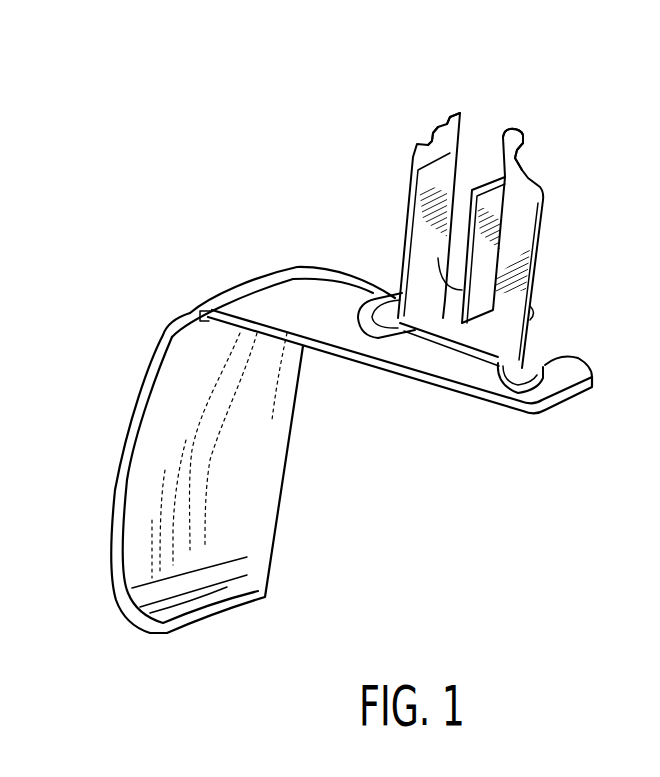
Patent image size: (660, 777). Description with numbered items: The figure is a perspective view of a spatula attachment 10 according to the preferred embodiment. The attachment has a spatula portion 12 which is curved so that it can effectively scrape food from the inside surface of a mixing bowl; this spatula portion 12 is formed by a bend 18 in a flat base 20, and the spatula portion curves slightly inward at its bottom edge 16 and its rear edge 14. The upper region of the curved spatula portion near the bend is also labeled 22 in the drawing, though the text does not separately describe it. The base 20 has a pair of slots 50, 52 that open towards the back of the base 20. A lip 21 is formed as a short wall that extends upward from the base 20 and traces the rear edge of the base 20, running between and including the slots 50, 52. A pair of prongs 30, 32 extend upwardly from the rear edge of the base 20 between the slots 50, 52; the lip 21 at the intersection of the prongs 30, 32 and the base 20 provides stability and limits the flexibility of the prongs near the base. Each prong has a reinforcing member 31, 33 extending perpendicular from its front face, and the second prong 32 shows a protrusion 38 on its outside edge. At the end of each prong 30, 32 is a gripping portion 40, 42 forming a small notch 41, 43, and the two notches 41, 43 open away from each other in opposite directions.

The spatula attachment 10 is at (180, 210).
The spatula portion 12 is at (143, 463).
The rear edge 14 is at (258, 530).
The bottom edge 16 is at (173, 607).
The bend 18 is at (213, 317).
The base 20 is at (371, 366).
The lip 21 is at (470, 355).
The top wall 22 is at (281, 300).
The prong 30 is at (382, 162).
The reinforcing member 31 is at (412, 197).
The prong 32 is at (556, 207).
The reinforcing member 33 is at (498, 210).
The protrusion 38 is at (533, 312).
The gripping portion 40 is at (452, 116).
The notch 41 is at (434, 131).
The gripping portion 42 is at (509, 134).
The notch 43 is at (524, 151).
The slot 50 is at (381, 300).
The slot 52 is at (540, 358).